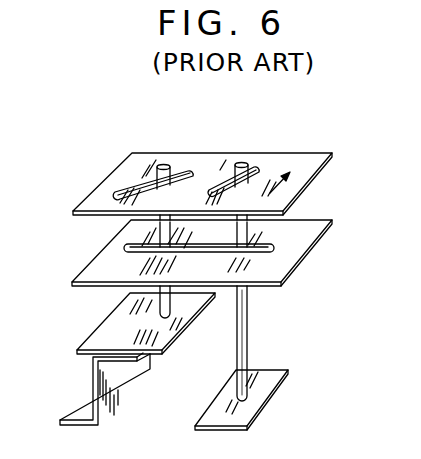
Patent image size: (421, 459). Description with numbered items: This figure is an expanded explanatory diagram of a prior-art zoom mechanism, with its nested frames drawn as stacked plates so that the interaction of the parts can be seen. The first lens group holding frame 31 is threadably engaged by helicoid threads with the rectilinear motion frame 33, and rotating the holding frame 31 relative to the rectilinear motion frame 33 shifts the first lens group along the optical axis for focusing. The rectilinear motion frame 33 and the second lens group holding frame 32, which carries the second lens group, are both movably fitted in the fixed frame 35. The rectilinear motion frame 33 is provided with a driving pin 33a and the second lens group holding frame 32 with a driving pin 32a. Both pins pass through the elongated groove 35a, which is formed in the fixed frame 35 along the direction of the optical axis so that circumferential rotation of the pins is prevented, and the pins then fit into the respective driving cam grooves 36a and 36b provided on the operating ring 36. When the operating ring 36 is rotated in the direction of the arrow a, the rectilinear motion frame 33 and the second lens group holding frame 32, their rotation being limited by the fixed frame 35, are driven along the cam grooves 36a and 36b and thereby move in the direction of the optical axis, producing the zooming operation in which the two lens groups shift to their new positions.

The first lens group holding frame 31 is at (80, 419).
The second lens group holding frame 32 is at (262, 392).
The driving pin 32a is at (240, 327).
The rectilinear motion frame 33 is at (94, 339).
The driving pin 33a is at (160, 312).
The fixed frame 35 is at (285, 263).
The elongated groove 35a is at (271, 246).
The operating ring 36 is at (312, 160).
The driving cam groove 36a is at (187, 170).
The driving cam groove 36b is at (255, 168).
The arrow a is at (280, 183).